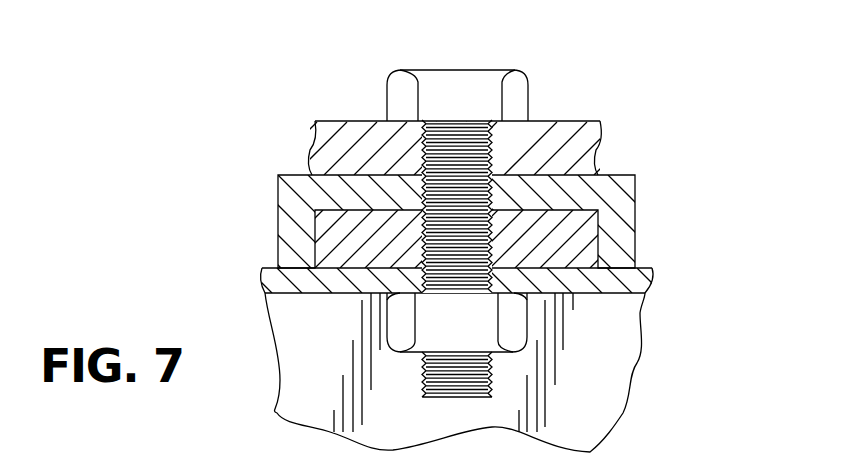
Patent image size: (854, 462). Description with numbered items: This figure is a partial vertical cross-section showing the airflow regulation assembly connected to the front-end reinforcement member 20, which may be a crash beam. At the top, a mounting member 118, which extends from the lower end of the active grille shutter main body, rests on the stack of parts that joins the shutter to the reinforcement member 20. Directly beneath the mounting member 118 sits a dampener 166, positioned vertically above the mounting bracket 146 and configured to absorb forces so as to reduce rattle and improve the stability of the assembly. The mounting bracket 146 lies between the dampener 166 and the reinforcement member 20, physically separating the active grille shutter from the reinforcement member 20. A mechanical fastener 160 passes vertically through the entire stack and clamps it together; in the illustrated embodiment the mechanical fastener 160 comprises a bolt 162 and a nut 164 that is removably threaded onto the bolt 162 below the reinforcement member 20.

The reinforcement member 20 is at (665, 287).
The mounting member 118 is at (618, 130).
The mounting bracket 146 is at (593, 232).
The mechanical fastener 160 is at (558, 212).
The bolt 162 is at (463, 85).
The nut 164 is at (477, 322).
The dampener 166 is at (653, 200).